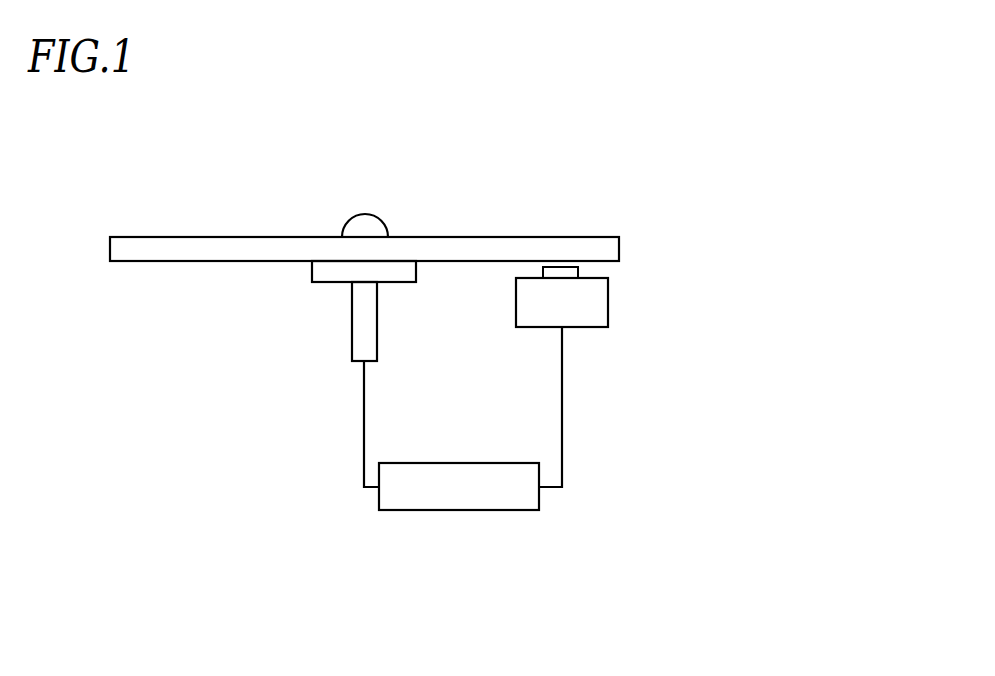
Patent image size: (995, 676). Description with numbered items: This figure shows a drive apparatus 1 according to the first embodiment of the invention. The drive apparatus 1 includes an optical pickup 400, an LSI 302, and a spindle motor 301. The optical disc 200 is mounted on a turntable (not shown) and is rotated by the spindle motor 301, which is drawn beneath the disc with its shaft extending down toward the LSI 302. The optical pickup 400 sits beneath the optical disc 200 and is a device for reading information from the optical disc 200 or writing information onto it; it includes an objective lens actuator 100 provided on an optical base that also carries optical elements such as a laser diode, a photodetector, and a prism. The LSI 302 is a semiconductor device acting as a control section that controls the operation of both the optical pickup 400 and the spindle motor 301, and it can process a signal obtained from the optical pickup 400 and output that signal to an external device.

The drive apparatus 1 is at (653, 187).
The objective lens actuator 100 is at (562, 273).
The optical disc 200 is at (143, 247).
The spindle motor 301 is at (325, 270).
The LSI 302 is at (459, 510).
The optical pickup 400 is at (583, 327).